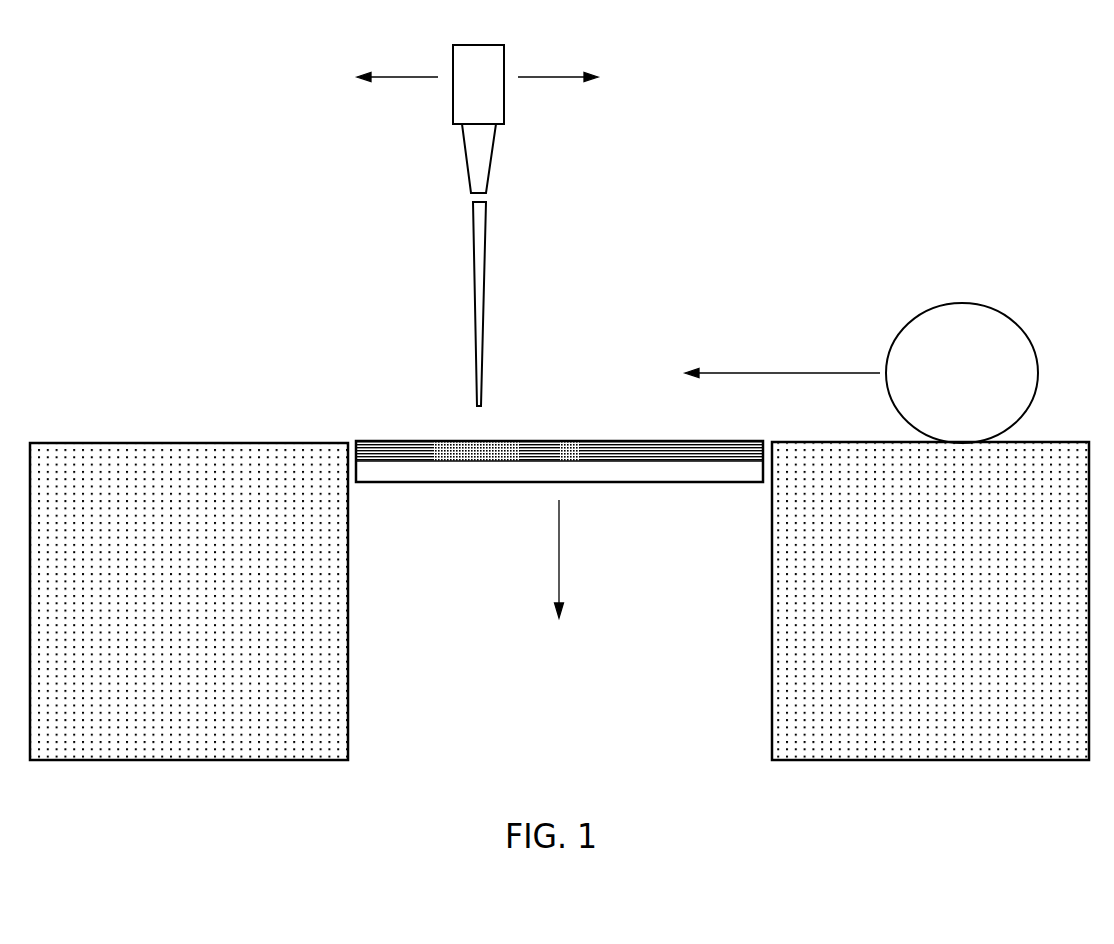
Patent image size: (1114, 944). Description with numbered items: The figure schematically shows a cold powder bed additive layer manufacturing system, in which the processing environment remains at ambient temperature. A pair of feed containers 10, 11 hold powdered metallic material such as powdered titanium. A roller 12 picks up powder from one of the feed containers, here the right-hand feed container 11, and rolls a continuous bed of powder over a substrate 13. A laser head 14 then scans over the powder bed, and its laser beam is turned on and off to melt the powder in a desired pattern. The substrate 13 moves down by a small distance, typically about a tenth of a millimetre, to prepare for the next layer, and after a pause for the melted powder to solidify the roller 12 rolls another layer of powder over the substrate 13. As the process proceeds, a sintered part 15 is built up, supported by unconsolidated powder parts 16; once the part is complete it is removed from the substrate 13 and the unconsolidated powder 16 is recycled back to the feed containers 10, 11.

The feed container 10 is at (333, 670).
The feed container 11 is at (785, 677).
The roller 12 is at (910, 325).
The substrate 13 is at (473, 473).
The laser head 14 is at (463, 101).
The sintered part 15 is at (492, 441).
The unconsolidated powder parts 16 is at (411, 441).